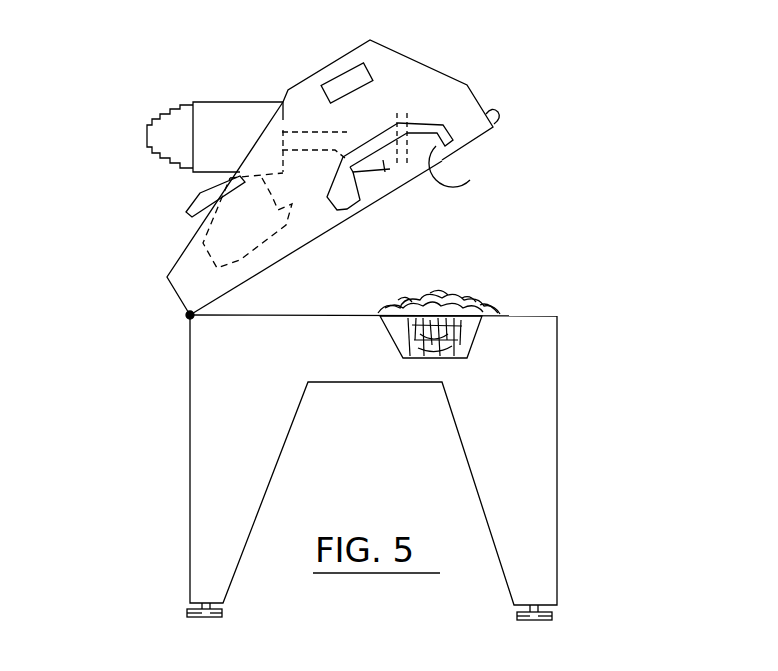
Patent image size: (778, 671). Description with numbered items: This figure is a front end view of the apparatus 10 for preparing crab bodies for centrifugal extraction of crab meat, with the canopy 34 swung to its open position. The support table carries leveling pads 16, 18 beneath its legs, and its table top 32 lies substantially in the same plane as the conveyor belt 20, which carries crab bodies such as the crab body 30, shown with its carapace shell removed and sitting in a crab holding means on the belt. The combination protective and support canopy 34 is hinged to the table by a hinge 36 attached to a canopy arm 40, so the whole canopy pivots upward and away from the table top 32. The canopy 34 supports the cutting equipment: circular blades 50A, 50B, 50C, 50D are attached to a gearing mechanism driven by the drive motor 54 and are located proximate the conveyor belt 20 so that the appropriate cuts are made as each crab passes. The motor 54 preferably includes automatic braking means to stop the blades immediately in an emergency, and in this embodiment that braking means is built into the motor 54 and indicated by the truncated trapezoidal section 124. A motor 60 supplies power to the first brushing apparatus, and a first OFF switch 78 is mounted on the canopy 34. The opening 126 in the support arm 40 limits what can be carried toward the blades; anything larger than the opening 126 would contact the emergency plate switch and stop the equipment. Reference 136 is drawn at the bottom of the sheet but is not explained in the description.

The apparatus 10 is at (582, 442).
The leveling pad 16 is at (538, 618).
The leveling pad 18 is at (197, 618).
The conveyor belt 20 is at (470, 332).
The crab body 30 is at (473, 293).
The table top 32 is at (533, 317).
The protective and support canopy 34 is at (397, 72).
The hinge 36 is at (186, 316).
The canopy arm 40 is at (193, 277).
The circular blade 50A is at (384, 173).
The circular blade 50B is at (400, 163).
The circular blade 50C is at (358, 174).
The circular blade 50D is at (407, 165).
The drive motor 54 is at (240, 117).
The motor 60 is at (190, 218).
The OFF switch 78 is at (345, 72).
The truncated trapezoidal section 124 is at (175, 118).
The opening 126 is at (461, 166).
The base 136 is at (310, 667).